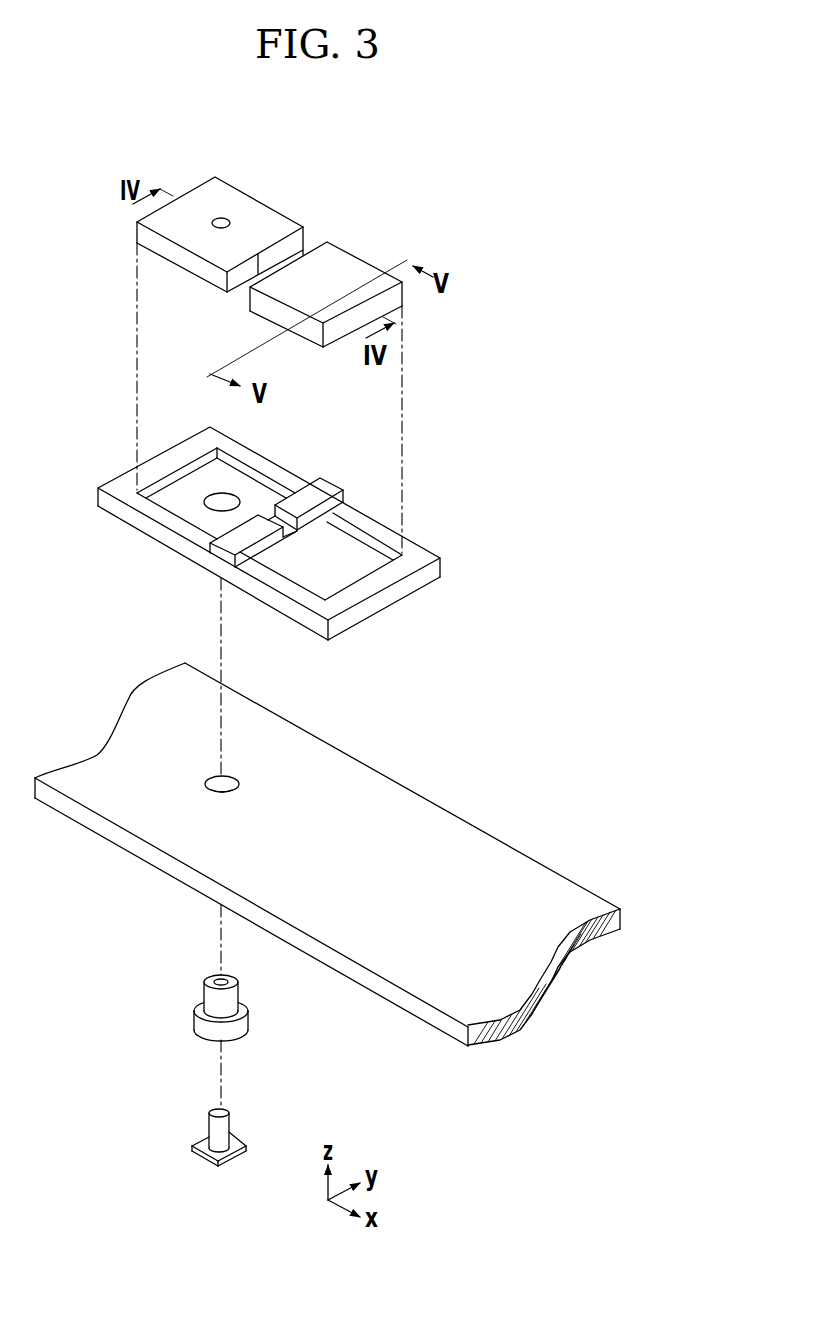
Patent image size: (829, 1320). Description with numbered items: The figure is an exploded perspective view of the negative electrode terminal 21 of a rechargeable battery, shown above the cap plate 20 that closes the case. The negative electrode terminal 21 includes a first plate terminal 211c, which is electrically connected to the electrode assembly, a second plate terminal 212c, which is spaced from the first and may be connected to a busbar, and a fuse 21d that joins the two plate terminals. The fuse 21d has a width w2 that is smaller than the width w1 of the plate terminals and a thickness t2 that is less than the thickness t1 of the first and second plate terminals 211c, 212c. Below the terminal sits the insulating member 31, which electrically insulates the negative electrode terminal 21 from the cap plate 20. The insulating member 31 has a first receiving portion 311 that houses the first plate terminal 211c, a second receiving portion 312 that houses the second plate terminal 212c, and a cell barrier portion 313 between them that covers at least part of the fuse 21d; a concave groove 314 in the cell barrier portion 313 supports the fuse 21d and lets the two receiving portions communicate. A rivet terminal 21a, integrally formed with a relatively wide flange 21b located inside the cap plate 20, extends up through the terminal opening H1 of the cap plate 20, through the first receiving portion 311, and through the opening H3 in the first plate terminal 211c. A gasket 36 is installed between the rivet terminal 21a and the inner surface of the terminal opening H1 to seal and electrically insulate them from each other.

The cap plate 20 is at (447, 833).
The negative electrode terminal 21 is at (267, 231).
The first plate terminal 211c is at (240, 197).
The second plate terminal 212c is at (332, 253).
The fuse 21d is at (300, 251).
The rivet terminal 21a is at (213, 1133).
The flange 21b is at (200, 1155).
The insulating member 31 is at (276, 509).
The first receiving portion 311 is at (193, 485).
The second receiving portion 312 is at (367, 563).
The cell barrier portion 313 is at (317, 492).
The concave groove 314 is at (285, 522).
The gasket 36 is at (196, 1003).
The terminal opening H1 is at (232, 785).
The opening H3 is at (224, 218).
The thickness of the plate terminals t1 is at (322, 324).
The thickness of the fuse t2 is at (258, 296).
The width of the plate terminals w1 is at (352, 258).
The width of the fuse w2 is at (301, 252).